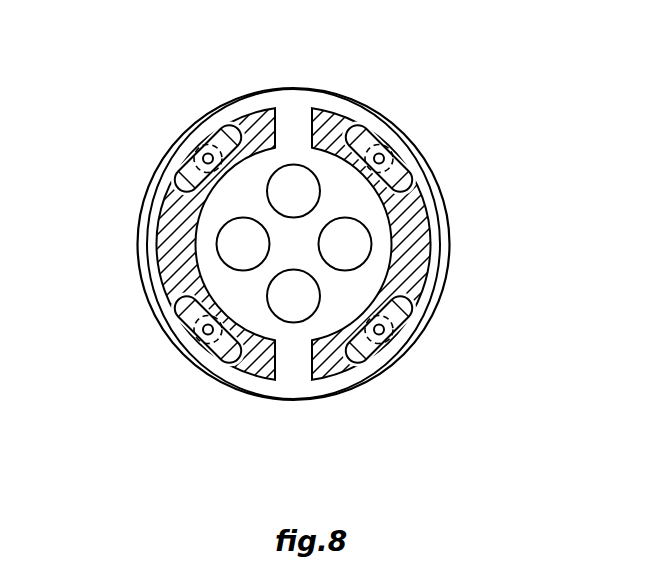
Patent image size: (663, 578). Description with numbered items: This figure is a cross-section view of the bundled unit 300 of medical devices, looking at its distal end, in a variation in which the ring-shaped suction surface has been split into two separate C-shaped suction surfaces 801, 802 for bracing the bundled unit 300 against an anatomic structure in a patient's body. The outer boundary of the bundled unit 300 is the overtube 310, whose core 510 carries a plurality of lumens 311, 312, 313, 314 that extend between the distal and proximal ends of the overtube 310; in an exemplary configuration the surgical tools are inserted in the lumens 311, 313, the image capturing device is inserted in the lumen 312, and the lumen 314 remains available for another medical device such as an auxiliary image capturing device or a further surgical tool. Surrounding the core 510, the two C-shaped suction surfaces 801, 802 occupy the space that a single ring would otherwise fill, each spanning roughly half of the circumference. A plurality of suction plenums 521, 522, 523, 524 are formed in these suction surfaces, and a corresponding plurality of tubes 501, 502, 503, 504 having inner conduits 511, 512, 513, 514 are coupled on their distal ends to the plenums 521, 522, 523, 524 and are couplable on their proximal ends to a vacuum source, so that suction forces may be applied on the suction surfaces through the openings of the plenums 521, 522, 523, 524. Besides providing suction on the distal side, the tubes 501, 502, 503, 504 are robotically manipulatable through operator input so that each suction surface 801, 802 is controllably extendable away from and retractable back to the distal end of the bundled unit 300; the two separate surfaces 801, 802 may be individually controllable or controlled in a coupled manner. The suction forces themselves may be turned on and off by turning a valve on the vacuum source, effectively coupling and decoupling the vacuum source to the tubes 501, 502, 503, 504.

The bundled unit 300 is at (277, 72).
The overtube 310 is at (450, 267).
The lumen 311 is at (229, 253).
The lumen 312 is at (308, 200).
The lumen 313 is at (331, 253).
The lumen 314 is at (308, 305).
The tube 501 is at (209, 141).
The tube 502 is at (399, 158).
The tube 503 is at (378, 350).
The tube 504 is at (186, 330).
The core 510 is at (298, 277).
The inner conduit 511 is at (202, 157).
The inner conduit 512 is at (382, 150).
The inner conduit 513 is at (392, 333).
The inner conduit 514 is at (198, 338).
The suction plenum 521 is at (173, 181).
The suction plenum 522 is at (404, 182).
The suction plenum 523 is at (413, 312).
The suction plenum 524 is at (178, 304).
The C-shaped suction surface 801 is at (162, 233).
The C-shaped suction surface 802 is at (414, 212).